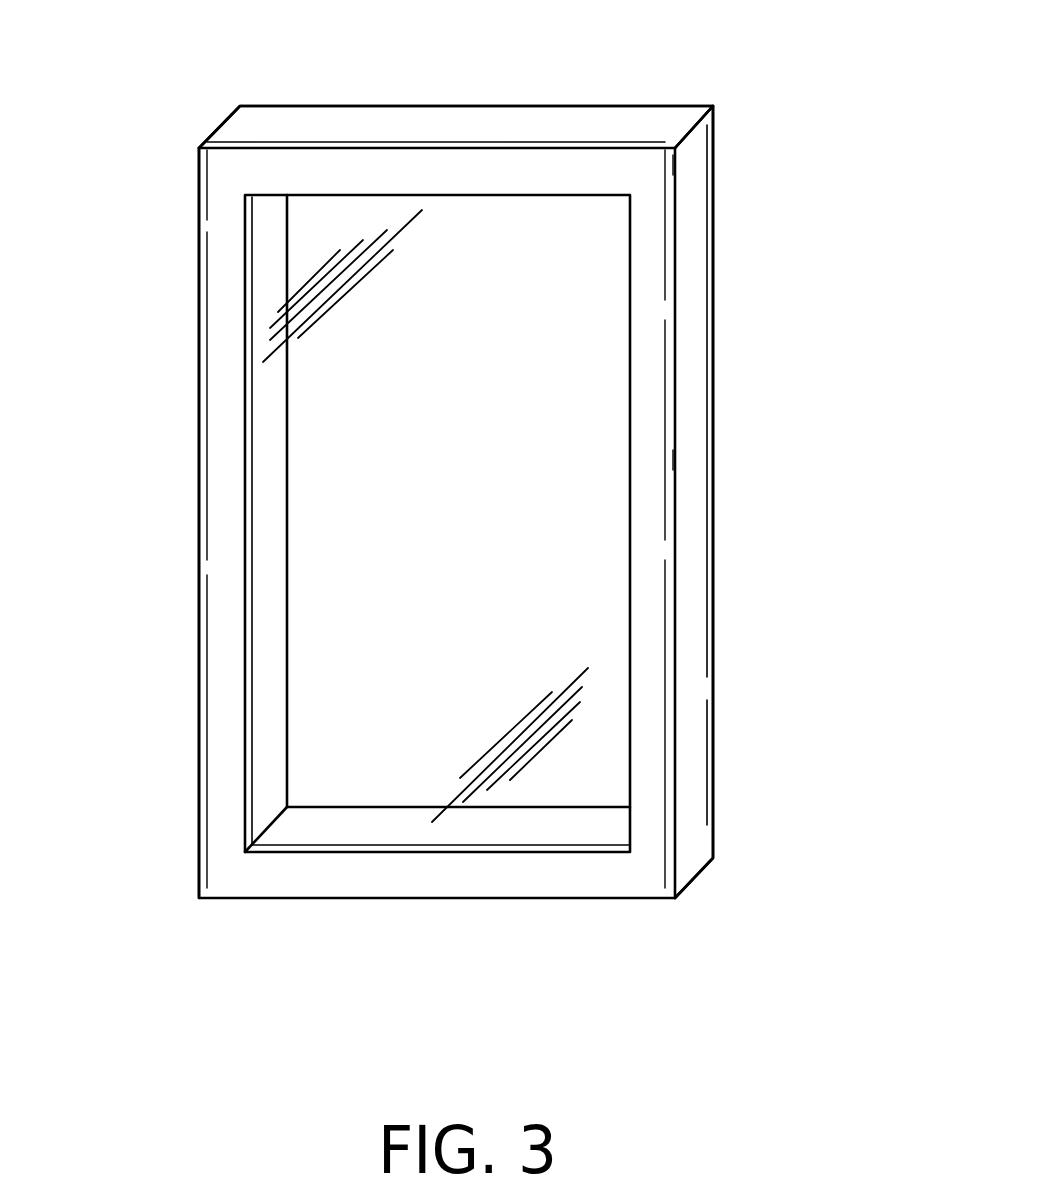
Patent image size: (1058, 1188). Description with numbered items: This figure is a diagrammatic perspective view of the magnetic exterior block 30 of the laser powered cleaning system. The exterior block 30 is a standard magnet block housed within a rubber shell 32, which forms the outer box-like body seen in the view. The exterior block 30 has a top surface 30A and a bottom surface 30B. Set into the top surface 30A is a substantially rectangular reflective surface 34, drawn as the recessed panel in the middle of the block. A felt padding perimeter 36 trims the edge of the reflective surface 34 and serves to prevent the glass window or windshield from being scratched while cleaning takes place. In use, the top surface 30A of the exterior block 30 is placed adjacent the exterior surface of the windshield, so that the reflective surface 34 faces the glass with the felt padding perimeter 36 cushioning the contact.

The exterior block 30 is at (820, 976).
The top surface 30A is at (198, 662).
The bottom surface 30B is at (637, 106).
The rubber shell 32 is at (700, 702).
The reflective surface 34 is at (452, 563).
The felt padding perimeter 36 is at (655, 437).